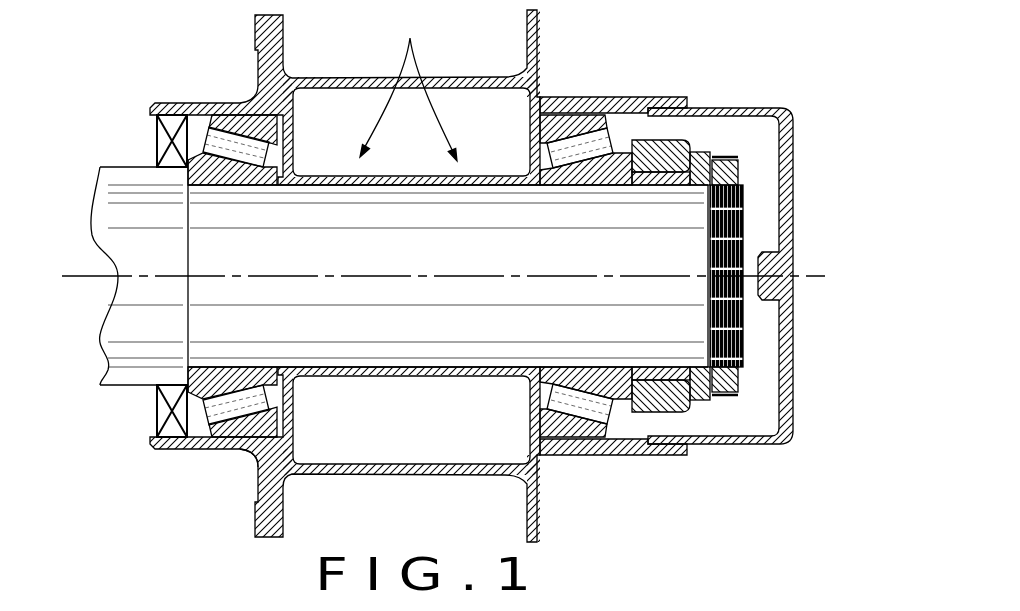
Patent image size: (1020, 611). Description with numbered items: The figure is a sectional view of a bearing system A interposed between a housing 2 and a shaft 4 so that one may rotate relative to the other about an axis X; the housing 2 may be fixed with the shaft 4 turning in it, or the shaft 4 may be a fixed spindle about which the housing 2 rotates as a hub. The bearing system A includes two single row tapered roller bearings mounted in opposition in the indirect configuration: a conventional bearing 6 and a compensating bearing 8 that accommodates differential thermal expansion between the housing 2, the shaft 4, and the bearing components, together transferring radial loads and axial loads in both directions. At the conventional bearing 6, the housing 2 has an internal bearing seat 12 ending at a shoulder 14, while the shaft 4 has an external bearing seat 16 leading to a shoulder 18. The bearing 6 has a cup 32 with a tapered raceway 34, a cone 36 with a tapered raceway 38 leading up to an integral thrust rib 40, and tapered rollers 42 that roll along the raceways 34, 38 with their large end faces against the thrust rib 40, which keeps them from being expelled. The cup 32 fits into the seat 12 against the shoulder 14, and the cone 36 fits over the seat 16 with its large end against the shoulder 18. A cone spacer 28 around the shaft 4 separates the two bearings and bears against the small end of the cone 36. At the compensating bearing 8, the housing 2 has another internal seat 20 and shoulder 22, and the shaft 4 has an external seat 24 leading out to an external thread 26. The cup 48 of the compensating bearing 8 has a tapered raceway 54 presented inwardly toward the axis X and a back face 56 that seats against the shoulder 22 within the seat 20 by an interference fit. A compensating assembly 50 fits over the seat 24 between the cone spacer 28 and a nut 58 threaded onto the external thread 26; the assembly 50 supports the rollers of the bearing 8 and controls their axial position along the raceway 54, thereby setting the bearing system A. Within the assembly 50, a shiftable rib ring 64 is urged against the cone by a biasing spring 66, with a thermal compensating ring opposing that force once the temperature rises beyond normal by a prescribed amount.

The housing 2 is at (358, 84).
The shaft 4 is at (112, 215).
The single row tapered roller bearing 6 is at (203, 442).
The compensating bearing 8 is at (622, 432).
The internal bearing seat 12 is at (233, 126).
The shoulder 14 is at (270, 135).
The external bearing seat 16 is at (346, 258).
The shoulder 18 is at (190, 213).
The internal seat 20 is at (577, 428).
The shoulder 22 is at (547, 425).
The external seat 24 is at (573, 332).
The external thread 26 is at (730, 310).
The cone spacer 28 is at (427, 378).
The cup 32 is at (247, 434).
The tapered raceway 34 is at (280, 395).
The cone 36 is at (239, 373).
The tapered raceway 38 is at (227, 396).
The thrust rib 40 is at (195, 392).
The tapered rollers 42 is at (212, 407).
The cup 48 is at (570, 122).
The compensating assembly 50 is at (724, 156).
The tapered raceway 54 is at (612, 150).
The back face 56 is at (540, 121).
The nut 58 is at (737, 379).
The shiftable rib ring 64 is at (663, 140).
The biasing spring 66 is at (690, 176).
The bearing system A is at (408, 87).
The axis X is at (432, 276).